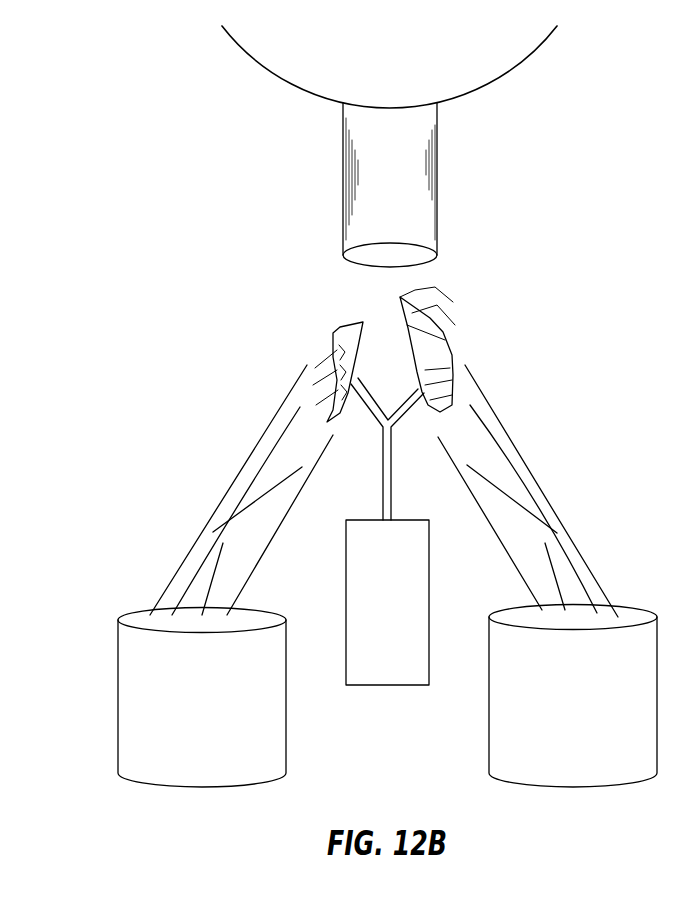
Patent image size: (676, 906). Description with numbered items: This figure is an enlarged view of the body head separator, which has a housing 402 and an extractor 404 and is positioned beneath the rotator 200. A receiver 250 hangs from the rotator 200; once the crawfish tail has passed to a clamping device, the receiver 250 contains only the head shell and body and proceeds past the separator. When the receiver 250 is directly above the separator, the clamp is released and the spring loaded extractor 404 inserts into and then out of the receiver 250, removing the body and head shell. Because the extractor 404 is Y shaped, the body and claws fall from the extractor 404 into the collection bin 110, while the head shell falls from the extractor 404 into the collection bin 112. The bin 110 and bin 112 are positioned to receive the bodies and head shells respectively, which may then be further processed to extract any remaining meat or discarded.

The rotator 200 is at (520, 58).
The receiver 250 is at (438, 180).
The extractor 404 is at (375, 495).
The housing 402 is at (410, 605).
The collection bin 110 is at (225, 773).
The collection bin 112 is at (597, 773).